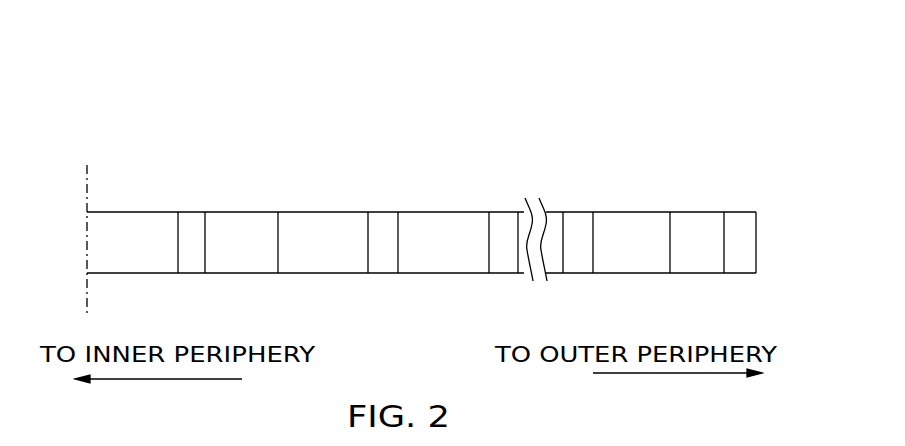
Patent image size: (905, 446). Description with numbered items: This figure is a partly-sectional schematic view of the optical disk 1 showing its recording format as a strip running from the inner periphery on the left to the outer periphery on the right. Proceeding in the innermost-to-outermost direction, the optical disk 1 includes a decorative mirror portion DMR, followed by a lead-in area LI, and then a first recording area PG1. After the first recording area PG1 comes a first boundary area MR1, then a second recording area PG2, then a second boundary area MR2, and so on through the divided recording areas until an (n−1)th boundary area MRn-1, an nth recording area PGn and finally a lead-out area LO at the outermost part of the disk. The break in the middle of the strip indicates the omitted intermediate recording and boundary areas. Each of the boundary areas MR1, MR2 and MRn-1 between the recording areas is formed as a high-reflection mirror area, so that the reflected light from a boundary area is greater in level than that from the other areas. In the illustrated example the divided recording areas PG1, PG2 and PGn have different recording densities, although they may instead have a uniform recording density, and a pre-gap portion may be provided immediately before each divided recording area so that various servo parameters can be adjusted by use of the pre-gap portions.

The optical disk 1 is at (464, 140).
The decorative mirror portion DMR is at (191, 235).
The lead-in area LI is at (241, 242).
The first recording area PG1 is at (323, 242).
The first boundary area MR1 is at (378, 233).
The second recording area PG2 is at (443, 242).
The second boundary area MR2 is at (501, 232).
The (n−1)th boundary area MRn-1 is at (577, 238).
The nth recording area PGn is at (631, 242).
The lead-out area LO is at (697, 242).